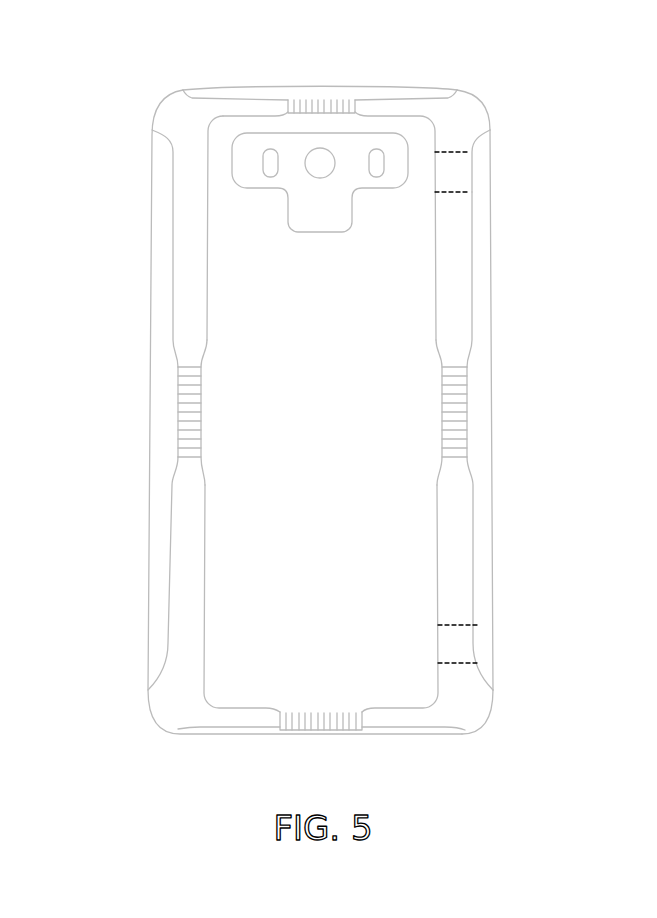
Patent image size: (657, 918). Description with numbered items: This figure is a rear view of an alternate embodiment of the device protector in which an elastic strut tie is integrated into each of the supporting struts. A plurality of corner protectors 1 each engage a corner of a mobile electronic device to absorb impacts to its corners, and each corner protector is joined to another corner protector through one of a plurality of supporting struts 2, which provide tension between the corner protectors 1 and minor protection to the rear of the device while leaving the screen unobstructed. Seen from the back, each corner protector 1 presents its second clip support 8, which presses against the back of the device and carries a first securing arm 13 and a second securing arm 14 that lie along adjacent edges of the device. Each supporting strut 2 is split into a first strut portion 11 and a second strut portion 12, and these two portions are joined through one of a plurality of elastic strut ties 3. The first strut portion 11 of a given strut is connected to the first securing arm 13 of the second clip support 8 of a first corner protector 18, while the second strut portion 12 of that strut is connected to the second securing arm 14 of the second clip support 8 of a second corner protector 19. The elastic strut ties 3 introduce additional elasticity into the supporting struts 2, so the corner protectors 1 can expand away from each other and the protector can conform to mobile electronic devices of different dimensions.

The corner protectors 1 is at (163, 108).
The supporting struts 2 is at (431, 58).
The elastic strut ties 3 is at (320, 104).
The second clip support 8 is at (498, 102).
The first strut portion 11 is at (463, 246).
The second strut portion 12 is at (462, 515).
The first securing arm 13 is at (462, 172).
The second securing arm 14 is at (465, 643).
The first corner protector 18 is at (545, 90).
The second corner protector 19 is at (557, 620).